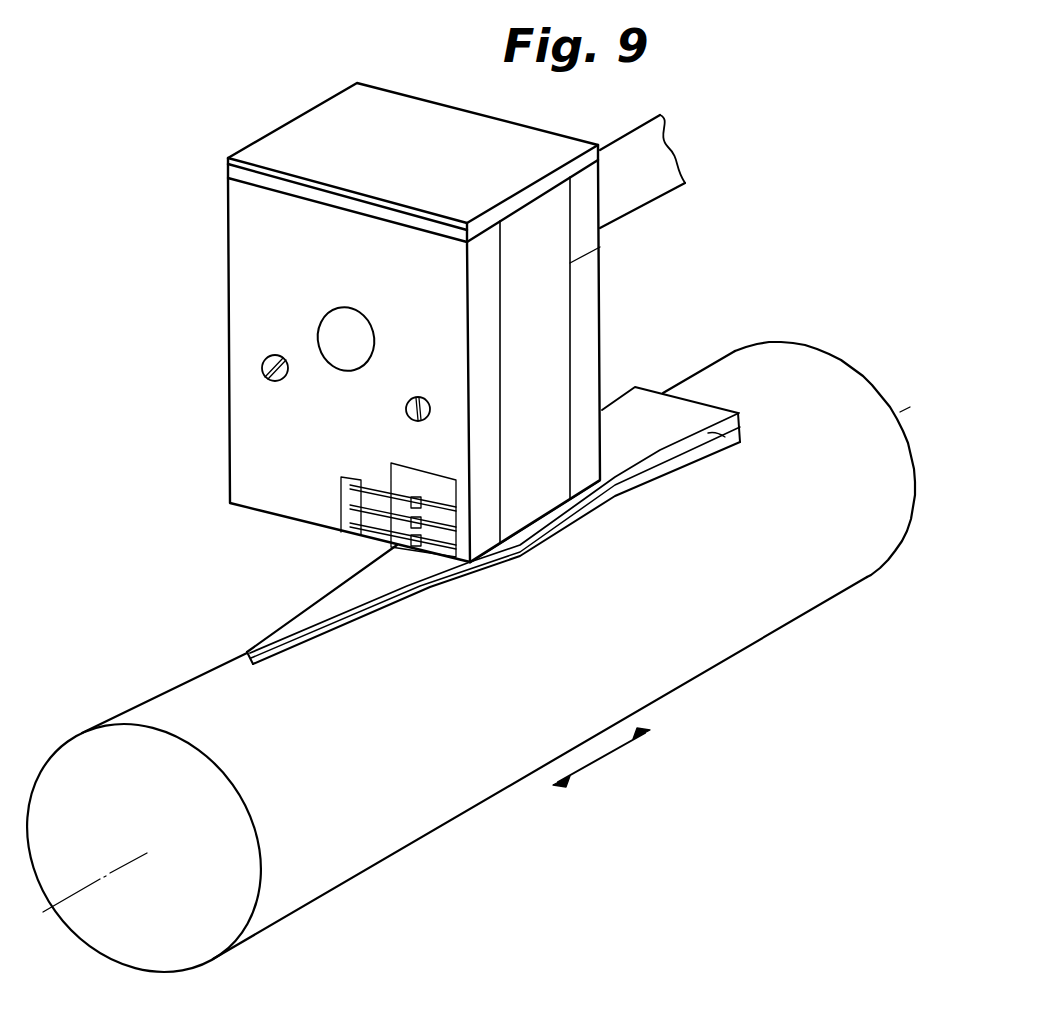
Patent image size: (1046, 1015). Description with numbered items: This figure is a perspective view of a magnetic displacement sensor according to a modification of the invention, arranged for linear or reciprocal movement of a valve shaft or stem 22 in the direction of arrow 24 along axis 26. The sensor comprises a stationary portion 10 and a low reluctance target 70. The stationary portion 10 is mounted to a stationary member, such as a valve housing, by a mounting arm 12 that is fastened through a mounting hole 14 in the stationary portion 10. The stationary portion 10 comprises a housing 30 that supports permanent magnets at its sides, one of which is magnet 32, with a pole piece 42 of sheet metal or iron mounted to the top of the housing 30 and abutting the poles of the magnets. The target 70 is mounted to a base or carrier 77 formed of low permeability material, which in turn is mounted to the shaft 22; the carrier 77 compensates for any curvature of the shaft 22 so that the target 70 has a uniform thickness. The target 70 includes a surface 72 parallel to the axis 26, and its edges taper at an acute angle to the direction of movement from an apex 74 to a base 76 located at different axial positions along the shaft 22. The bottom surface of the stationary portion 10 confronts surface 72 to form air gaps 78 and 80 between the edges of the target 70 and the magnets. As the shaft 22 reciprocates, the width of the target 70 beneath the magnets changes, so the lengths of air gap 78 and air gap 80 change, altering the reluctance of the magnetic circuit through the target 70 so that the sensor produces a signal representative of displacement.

The stationary portion 10 is at (407, 323).
The mounting arm 12 is at (657, 200).
The mounting hole 14 is at (336, 303).
The shaft or stem 22 is at (787, 625).
The arrow 24 is at (602, 758).
The axis 26 is at (80, 893).
The housing 30 is at (601, 278).
The permanent magnet 32 is at (600, 248).
The pole piece 42 is at (537, 128).
The low reluctance target 70 is at (488, 556).
The surface 72 is at (645, 399).
The apex 74 is at (247, 652).
The base 76 is at (742, 430).
The base or carrier 77 is at (670, 465).
The air gap 78 is at (540, 538).
The air gap 80 is at (373, 552).